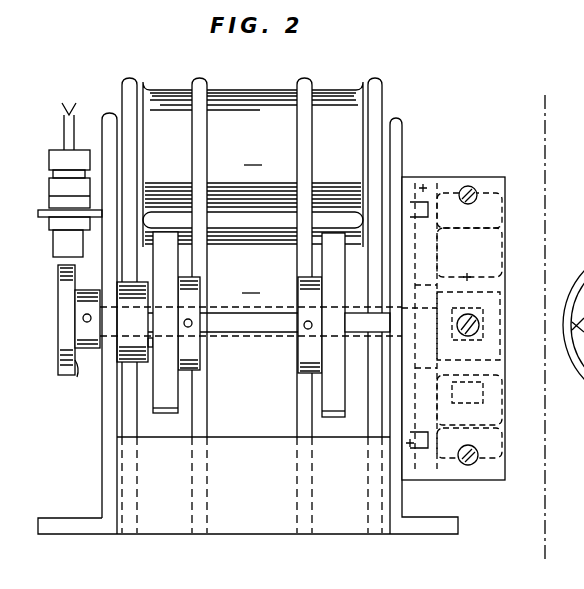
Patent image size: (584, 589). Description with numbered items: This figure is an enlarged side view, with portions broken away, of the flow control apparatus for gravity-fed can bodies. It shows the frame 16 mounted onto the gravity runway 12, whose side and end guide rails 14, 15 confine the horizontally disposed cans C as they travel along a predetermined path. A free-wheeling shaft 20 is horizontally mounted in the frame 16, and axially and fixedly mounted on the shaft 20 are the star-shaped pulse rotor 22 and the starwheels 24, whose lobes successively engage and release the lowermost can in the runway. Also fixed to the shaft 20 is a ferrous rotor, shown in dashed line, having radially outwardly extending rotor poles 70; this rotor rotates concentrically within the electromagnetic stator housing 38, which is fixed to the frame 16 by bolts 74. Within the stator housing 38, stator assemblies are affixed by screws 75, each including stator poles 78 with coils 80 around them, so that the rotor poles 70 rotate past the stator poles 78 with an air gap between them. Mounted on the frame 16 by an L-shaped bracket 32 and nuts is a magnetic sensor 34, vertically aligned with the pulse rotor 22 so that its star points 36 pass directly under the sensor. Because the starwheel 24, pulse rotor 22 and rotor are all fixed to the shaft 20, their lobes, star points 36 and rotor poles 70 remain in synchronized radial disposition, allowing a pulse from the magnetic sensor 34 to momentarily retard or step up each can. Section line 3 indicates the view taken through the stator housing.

The section line 3- 3 is at (512, 547).
The gravity runway 12 is at (340, 79).
The side guide rails 14 is at (295, 89).
The end guide rails 15 is at (132, 78).
The frame 16 is at (398, 137).
The free-wheeling shaft 20 is at (56, 327).
The star-shaped pulse rotor 22 is at (76, 378).
The starwheel 24 is at (170, 393).
The L-shaped bracket 32 is at (97, 137).
The magnetic sensor 34 is at (62, 252).
The star points 36 is at (63, 280).
The electromagnetic stator housing 38 is at (464, 168).
The rotor poles 70 is at (515, 397).
The bolts 74 is at (423, 183).
The screws 75 is at (473, 190).
The stator poles 78 is at (478, 304).
The coils 80 is at (505, 237).